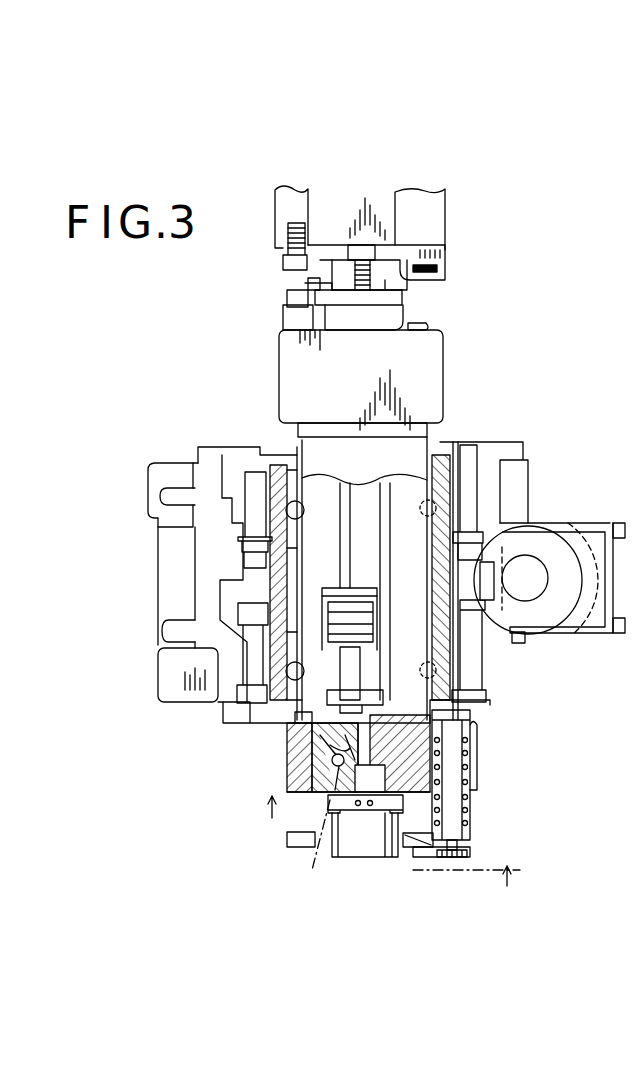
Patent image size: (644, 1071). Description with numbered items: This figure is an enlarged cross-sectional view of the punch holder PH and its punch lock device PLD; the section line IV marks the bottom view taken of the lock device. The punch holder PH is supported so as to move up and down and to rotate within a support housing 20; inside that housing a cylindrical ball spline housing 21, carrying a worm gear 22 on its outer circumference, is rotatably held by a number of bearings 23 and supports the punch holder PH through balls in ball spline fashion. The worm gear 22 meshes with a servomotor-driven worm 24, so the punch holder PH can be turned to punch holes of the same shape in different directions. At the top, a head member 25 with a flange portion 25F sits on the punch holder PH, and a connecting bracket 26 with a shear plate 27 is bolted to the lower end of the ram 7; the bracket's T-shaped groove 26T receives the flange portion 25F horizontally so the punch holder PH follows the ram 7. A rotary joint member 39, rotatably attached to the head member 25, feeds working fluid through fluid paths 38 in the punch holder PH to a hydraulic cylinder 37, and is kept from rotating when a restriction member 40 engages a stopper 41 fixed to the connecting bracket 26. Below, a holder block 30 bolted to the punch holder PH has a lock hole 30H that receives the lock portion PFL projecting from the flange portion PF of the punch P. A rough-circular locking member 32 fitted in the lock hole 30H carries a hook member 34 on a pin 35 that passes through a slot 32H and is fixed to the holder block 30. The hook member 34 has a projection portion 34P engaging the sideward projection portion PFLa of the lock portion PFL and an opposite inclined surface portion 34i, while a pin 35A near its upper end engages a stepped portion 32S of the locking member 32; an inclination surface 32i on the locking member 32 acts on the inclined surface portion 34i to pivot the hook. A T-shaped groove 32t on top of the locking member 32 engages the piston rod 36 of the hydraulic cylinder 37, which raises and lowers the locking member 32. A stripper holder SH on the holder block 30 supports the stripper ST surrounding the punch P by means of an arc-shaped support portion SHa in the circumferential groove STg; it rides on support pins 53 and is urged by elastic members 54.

The ram 7 is at (440, 212).
The connecting bracket 26 is at (446, 259).
The shear plate 27 is at (374, 247).
The flange portion 25F is at (403, 299).
The head member 25 is at (372, 315).
The T-shaped groove 26T is at (310, 285).
The stopper 41 is at (288, 299).
The restriction member 40 is at (286, 322).
The rotary joint member 39 is at (440, 345).
The punch holder PH is at (500, 382).
The worm gear 22 is at (230, 586).
The support housing 20 is at (222, 690).
The fluid paths 38 is at (350, 518).
The bearings 23 is at (252, 492).
The ball spline housing 21 is at (470, 450).
The worm 24 is at (540, 620).
The hydraulic cylinder 37 is at (374, 607).
The piston rod 36 is at (356, 666).
The T-shaped groove 32t is at (338, 732).
The stepped portion 32S is at (296, 740).
The locking member 32 is at (290, 780).
The punch lock device PLD is at (277, 766).
The pin 35A is at (300, 715).
The hook member 34 is at (340, 742).
The pin 35 is at (345, 778).
The holder block 30 is at (300, 792).
The inclination surface 32i is at (325, 775).
The projection portion 34P is at (322, 833).
The inclined surface portion 34i is at (318, 845).
The slot 32H is at (318, 853).
The flange portion PF is at (326, 860).
The stripper ST is at (337, 862).
The punch P is at (360, 862).
The circumferential groove STg is at (386, 862).
The sideward projection portion PFLa is at (390, 866).
The lock portion PFL is at (462, 765).
The support pins 53 is at (462, 800).
The elastic members 54 is at (468, 822).
The lock hole 30H is at (437, 745).
The stripper holder SH is at (432, 855).
The support portion SHa is at (442, 862).
The section line IV- IV is at (396, 849).